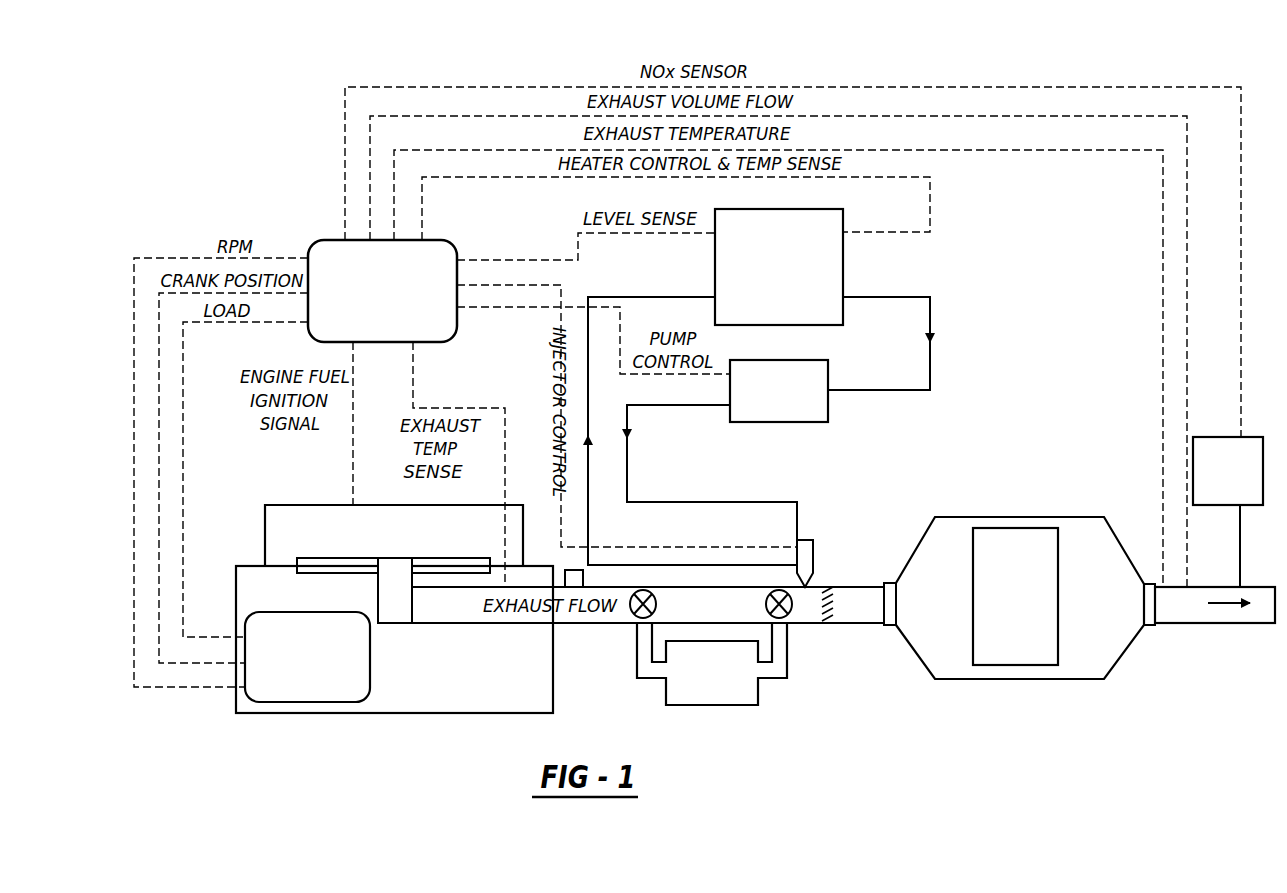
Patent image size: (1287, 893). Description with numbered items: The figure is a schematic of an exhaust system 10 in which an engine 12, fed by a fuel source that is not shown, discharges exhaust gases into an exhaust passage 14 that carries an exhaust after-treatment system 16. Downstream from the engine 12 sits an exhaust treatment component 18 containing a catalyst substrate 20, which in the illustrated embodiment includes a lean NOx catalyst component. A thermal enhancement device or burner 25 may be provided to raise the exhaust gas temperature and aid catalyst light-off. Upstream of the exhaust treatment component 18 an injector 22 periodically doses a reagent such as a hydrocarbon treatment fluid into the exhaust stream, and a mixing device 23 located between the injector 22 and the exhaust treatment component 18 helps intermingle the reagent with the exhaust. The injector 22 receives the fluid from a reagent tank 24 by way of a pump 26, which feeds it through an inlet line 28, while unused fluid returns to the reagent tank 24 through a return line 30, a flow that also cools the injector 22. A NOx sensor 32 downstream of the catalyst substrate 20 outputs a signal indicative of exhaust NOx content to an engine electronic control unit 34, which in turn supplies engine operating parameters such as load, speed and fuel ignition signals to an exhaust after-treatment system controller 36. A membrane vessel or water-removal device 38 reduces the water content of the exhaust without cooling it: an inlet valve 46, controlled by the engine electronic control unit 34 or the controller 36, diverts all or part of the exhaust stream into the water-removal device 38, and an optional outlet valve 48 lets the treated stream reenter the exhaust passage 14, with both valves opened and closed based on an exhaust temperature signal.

The exhaust system 10 is at (221, 146).
The engine 12 is at (355, 713).
The exhaust passage 14 is at (573, 623).
The exhaust after-treatment system 16 is at (858, 716).
The exhaust treatment component 18 is at (1055, 679).
The catalyst substrate 20 is at (1004, 615).
The injector 22 is at (813, 556).
The mixing device 23 is at (836, 607).
The reagent tank 24 is at (843, 272).
The burner 25 is at (573, 570).
The pump 26 is at (775, 422).
The inlet line 28 is at (627, 462).
The return line 30 is at (690, 297).
The NOx sensor 32 is at (1250, 437).
The engine electronic control unit 34 is at (290, 703).
The exhaust after-treatment system controller 36 is at (437, 240).
The water-removal device 38 is at (740, 705).
The inlet valve 46 is at (628, 612).
The outlet valve 48 is at (790, 606).